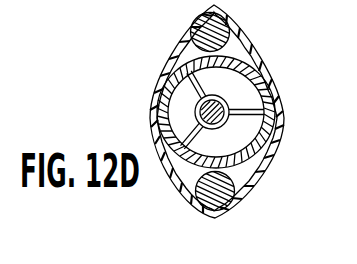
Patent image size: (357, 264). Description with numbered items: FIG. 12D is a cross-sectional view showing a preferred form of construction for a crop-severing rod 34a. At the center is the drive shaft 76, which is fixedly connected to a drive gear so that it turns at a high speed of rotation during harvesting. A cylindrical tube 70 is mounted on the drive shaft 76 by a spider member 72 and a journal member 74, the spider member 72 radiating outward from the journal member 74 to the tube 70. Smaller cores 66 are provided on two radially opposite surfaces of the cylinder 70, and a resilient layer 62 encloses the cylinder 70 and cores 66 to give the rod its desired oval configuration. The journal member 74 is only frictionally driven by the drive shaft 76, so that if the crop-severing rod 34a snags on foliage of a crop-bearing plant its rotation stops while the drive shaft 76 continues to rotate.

The crop-severing rod 34a is at (272, 48).
The cores 66 is at (191, 30).
The cylindrical tube 70 is at (274, 91).
The resilient layer 62 is at (279, 126).
The spider member 72 is at (202, 88).
The journal member 74 is at (215, 133).
The drive shaft 76 is at (195, 112).